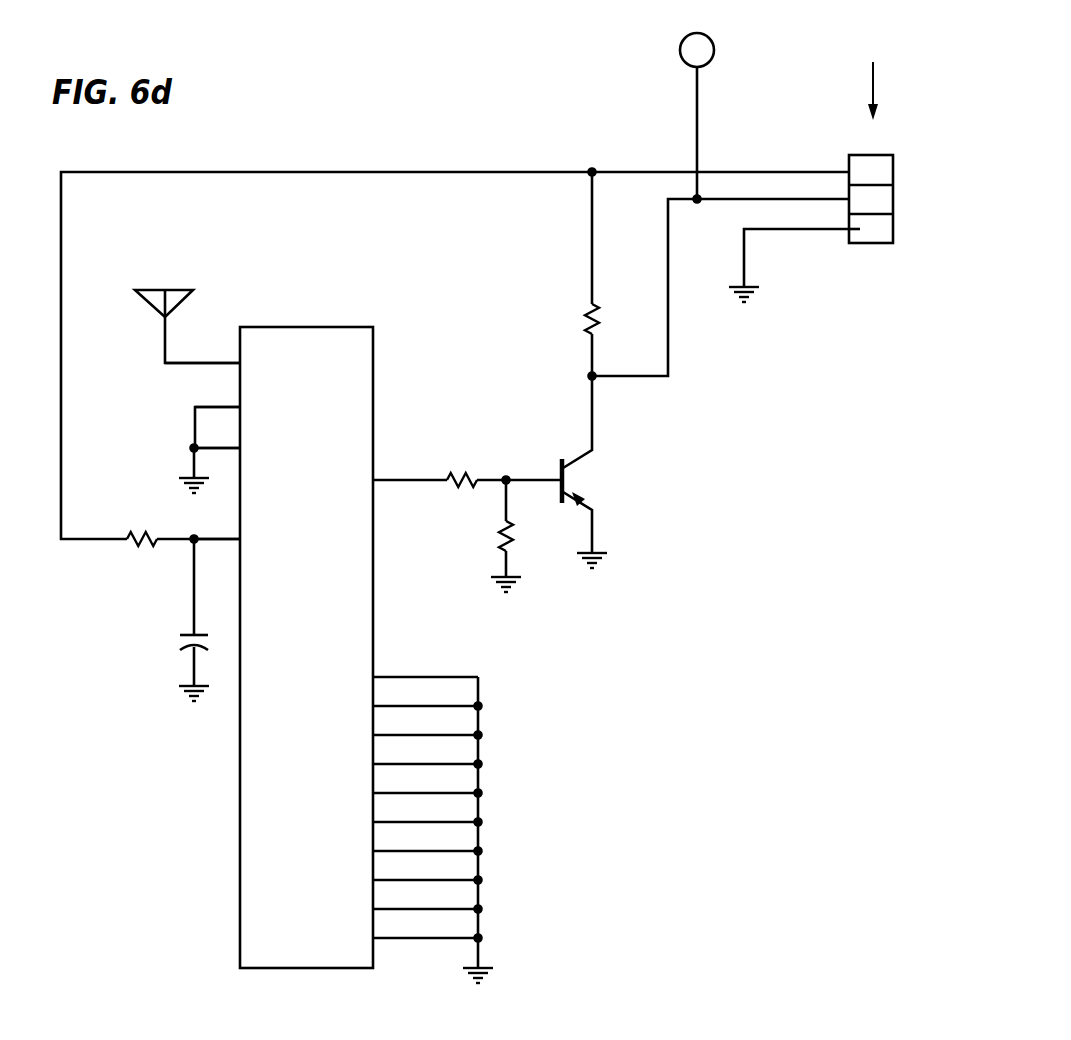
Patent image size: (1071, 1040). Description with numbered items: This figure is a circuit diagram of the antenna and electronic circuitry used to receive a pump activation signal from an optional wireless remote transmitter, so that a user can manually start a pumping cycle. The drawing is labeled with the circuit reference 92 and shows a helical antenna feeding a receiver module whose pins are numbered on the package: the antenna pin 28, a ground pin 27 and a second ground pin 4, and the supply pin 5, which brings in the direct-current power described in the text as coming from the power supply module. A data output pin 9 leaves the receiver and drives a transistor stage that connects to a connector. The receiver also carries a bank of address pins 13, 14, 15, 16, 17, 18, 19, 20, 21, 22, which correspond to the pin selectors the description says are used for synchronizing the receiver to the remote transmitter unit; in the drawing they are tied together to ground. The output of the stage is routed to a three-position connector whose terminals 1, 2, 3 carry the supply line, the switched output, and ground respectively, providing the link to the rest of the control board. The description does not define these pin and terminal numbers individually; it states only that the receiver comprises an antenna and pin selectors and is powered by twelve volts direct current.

The receiver circuit 92 is at (513, 146).
The ANT pin 28 is at (202, 349).
The GND pin 27 is at (217, 394).
The GND pin 4 is at (217, 435).
The VCC pin 5 is at (217, 526).
The D4 output pin 9 is at (410, 467).
The A0 pin 13 is at (425, 665).
The A1 pin 14 is at (427, 696).
The A2 pin 15 is at (427, 725).
The A3 pin 16 is at (427, 754).
The A4 pin 17 is at (427, 783).
The A5 pin 18 is at (427, 812).
The A6 pin 19 is at (427, 841).
The A7 pin 20 is at (427, 870).
The A8 pin 21 is at (427, 899).
The A9 pin 22 is at (427, 928).
The J5 pin 1 is at (871, 174).
The J5 pin 2 is at (871, 203).
The J5 pin 3 is at (864, 232).